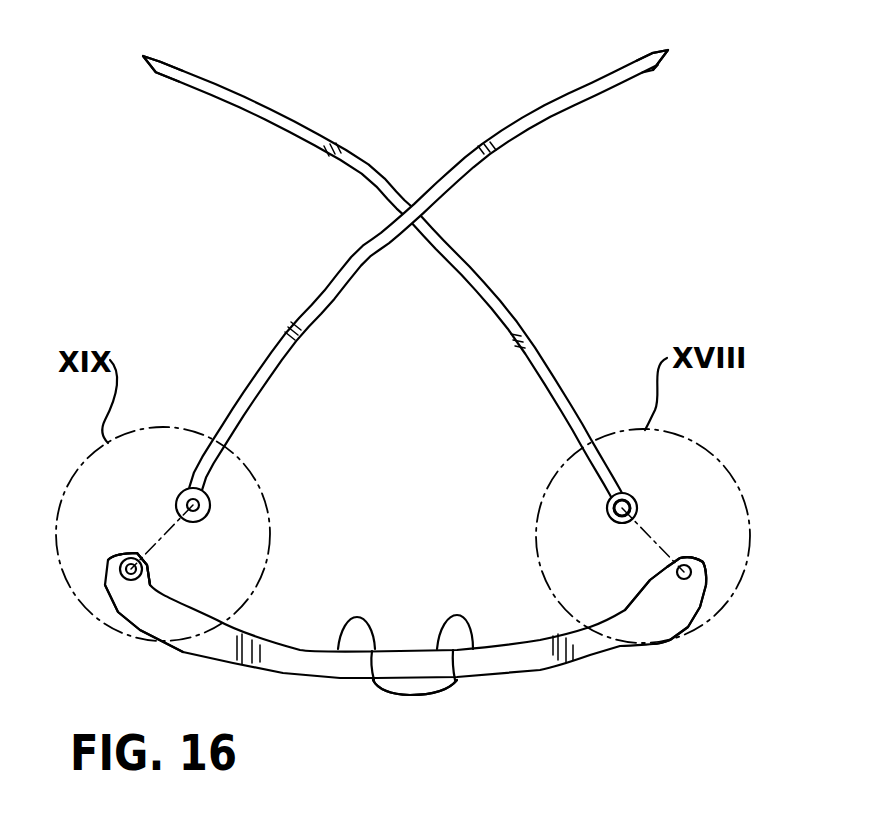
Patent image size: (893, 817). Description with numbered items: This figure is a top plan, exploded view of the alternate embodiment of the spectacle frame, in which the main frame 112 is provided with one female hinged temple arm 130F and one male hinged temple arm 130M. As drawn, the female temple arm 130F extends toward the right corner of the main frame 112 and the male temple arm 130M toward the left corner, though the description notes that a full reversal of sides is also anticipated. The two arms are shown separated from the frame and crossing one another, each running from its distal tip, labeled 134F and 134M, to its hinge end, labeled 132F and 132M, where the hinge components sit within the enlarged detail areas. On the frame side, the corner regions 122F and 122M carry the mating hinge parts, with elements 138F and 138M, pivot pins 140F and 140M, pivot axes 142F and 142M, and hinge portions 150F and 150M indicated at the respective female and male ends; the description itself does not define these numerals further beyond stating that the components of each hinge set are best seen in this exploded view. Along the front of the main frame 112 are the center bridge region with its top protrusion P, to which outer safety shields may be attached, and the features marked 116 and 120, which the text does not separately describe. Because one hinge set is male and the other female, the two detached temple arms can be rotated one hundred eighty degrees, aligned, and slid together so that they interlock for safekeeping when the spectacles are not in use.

The main frame 112 is at (295, 655).
The pad 116 is at (397, 665).
The protrusions 120 is at (447, 614).
The male mounting bracket 122M is at (139, 614).
The female mounting bracket 122F is at (683, 606).
The male hinged temple arm 130M is at (338, 266).
The female hinged temple arm 130F is at (480, 283).
The male arm proximal end 132M is at (213, 488).
The female arm proximal end 132F is at (633, 487).
The male arm distal tip 134M is at (622, 66).
The female arm distal tip 134F is at (180, 61).
The male bracket portion 138M is at (123, 557).
The female pivot 138F is at (637, 502).
The male pivot pin 140M is at (140, 574).
The female pivot pin 140F is at (612, 516).
The male pivot axis 142M is at (148, 567).
The female pivot axis 142F is at (634, 531).
The male hinge 150M is at (187, 497).
The female hinge 150F is at (705, 561).
The top protrusion P is at (430, 687).